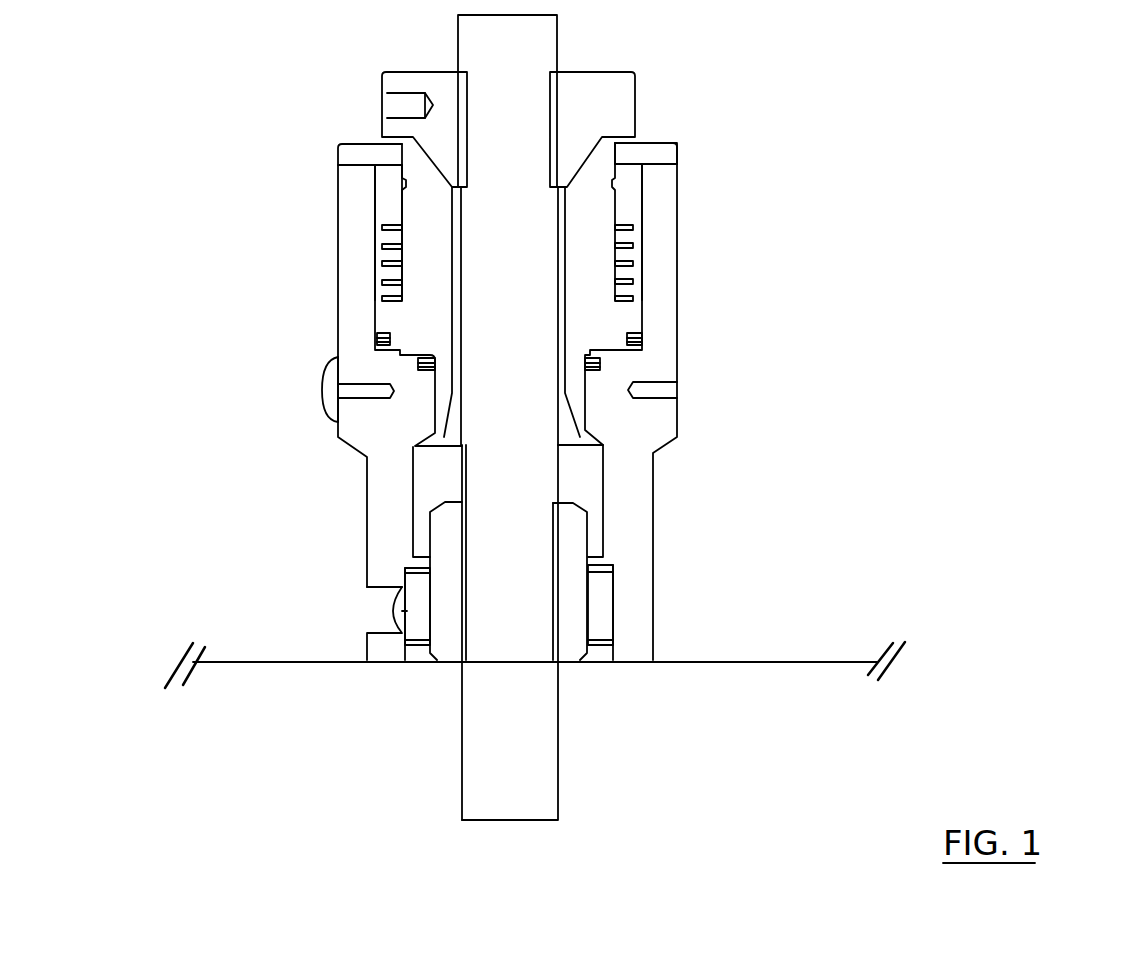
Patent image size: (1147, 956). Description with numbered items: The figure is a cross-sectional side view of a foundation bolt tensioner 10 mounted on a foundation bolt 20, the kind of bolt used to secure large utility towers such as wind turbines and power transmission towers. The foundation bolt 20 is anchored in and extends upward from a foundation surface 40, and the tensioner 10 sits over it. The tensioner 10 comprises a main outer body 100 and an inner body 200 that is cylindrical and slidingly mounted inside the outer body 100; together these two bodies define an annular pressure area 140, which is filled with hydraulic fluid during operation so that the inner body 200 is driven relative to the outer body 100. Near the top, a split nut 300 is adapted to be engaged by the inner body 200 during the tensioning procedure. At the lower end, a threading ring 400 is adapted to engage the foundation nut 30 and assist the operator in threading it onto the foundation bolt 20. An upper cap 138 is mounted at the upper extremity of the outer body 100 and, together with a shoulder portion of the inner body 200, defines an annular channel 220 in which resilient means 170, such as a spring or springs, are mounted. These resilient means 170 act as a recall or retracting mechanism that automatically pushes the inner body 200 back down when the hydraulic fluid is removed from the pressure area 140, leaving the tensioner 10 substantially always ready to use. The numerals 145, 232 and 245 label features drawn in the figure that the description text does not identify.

The foundation bolt tensioner 10 is at (1010, 112).
The foundation bolt 20 is at (543, 750).
The foundation nut 30 is at (580, 537).
The foundation surface 40 is at (792, 670).
The main outer body 100 is at (673, 418).
The upper cap 138 is at (667, 152).
The annular pressure area 140 is at (418, 357).
The lower locking lug 145 is at (602, 362).
The resilient means 170 is at (380, 227).
The inner body 200 is at (390, 308).
The annular channel 220 is at (630, 202).
The tooth 232 is at (640, 297).
The upper lug 245 is at (642, 338).
The split nut 300 is at (643, 83).
The threading ring 400 is at (602, 605).